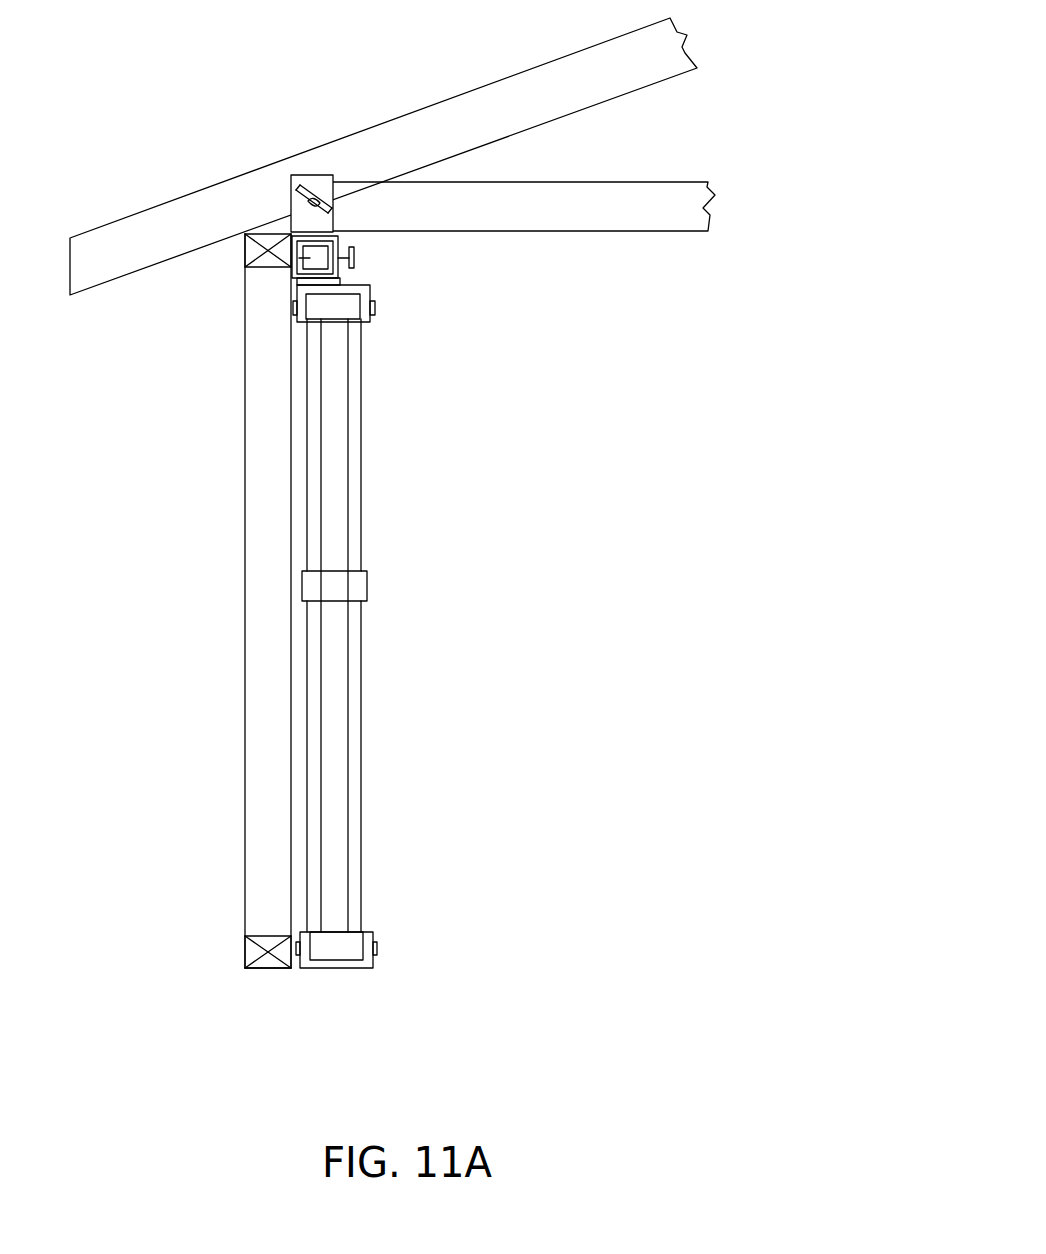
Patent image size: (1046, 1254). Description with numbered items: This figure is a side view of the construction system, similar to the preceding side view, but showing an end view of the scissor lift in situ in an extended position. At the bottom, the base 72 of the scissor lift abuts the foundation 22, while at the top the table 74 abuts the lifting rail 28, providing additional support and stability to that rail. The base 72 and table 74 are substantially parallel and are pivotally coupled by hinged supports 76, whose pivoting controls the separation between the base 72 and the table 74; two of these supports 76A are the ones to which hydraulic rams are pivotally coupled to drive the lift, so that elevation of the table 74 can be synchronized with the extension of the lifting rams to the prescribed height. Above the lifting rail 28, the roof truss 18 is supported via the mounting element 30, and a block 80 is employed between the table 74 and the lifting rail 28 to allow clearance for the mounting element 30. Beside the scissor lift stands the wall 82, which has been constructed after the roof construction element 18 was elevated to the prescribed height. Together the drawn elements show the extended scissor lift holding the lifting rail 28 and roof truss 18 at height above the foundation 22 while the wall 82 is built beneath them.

The roof truss 18 is at (172, 220).
The mounting element 30 is at (323, 180).
The lifting rail 28 is at (291, 270).
The block 80 is at (340, 280).
The table 74 is at (374, 318).
The hinged supports 76 is at (361, 471).
The supports 76A is at (363, 706).
The wall 82 is at (268, 664).
The base 72 is at (373, 934).
The foundation 22 is at (355, 1020).